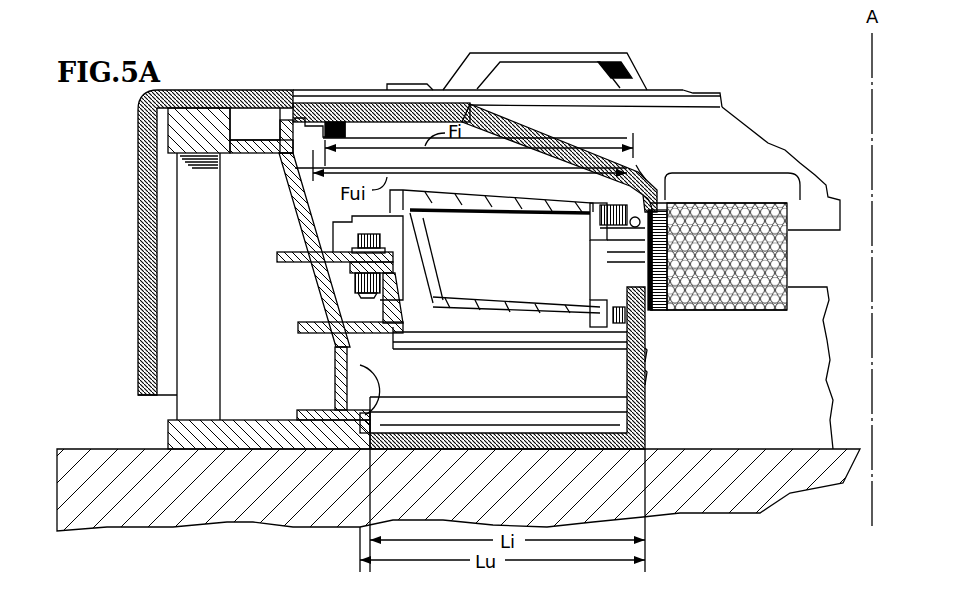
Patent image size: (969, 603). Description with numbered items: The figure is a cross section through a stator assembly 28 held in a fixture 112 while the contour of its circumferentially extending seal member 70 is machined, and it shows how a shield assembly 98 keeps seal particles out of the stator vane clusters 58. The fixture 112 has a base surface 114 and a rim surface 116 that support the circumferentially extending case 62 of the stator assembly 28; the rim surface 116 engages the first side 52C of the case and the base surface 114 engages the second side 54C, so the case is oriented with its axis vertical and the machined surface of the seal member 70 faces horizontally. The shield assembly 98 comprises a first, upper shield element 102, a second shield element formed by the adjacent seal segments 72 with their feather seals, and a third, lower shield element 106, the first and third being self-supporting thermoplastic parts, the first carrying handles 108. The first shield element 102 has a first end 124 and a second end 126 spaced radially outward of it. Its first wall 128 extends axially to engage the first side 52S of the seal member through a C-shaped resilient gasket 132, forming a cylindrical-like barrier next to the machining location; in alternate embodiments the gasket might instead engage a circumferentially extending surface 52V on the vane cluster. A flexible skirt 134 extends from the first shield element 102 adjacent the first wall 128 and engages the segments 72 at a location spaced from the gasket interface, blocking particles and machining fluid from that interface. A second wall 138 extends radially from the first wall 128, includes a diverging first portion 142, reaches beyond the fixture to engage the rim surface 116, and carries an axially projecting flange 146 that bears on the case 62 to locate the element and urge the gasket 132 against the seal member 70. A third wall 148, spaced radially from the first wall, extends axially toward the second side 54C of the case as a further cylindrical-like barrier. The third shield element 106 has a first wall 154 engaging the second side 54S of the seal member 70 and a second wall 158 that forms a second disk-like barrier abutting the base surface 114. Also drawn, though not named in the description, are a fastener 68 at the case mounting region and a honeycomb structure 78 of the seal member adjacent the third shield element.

The first shield element 102 is at (396, 60).
The second wall 138 is at (439, 103).
The handles 108 is at (594, 53).
The second end 126 is at (207, 107).
The rim surface 116 is at (232, 130).
The first side of the case 52C is at (293, 100).
The first portion 142 is at (507, 122).
The axially projecting flange 146 is at (352, 132).
The skirt 134 is at (638, 170).
The first wall 128 is at (655, 197).
The first end 124 is at (669, 190).
The first side of the seal member 52S is at (662, 203).
The case 62 is at (287, 168).
The fastener 68 is at (413, 280).
The circumferentially extending surface 52V is at (612, 222).
The first resilient gasket 132 is at (624, 236).
The seal segments 72 is at (637, 273).
The seal member 70 is at (872, 265).
The third wall 148 is at (137, 247).
The stator assembly 28 is at (311, 343).
The base surface 114 is at (270, 417).
The second side of the case 54C is at (394, 392).
The stator vane clusters 58 is at (563, 313).
The second wall 158 is at (533, 430).
The fixture 112 is at (171, 408).
The second side of the seal member 54S is at (657, 317).
The shield assembly 98 is at (648, 355).
The mesh filter 78 is at (763, 288).
The third shield element 106 is at (648, 378).
The first wall 154 is at (640, 398).